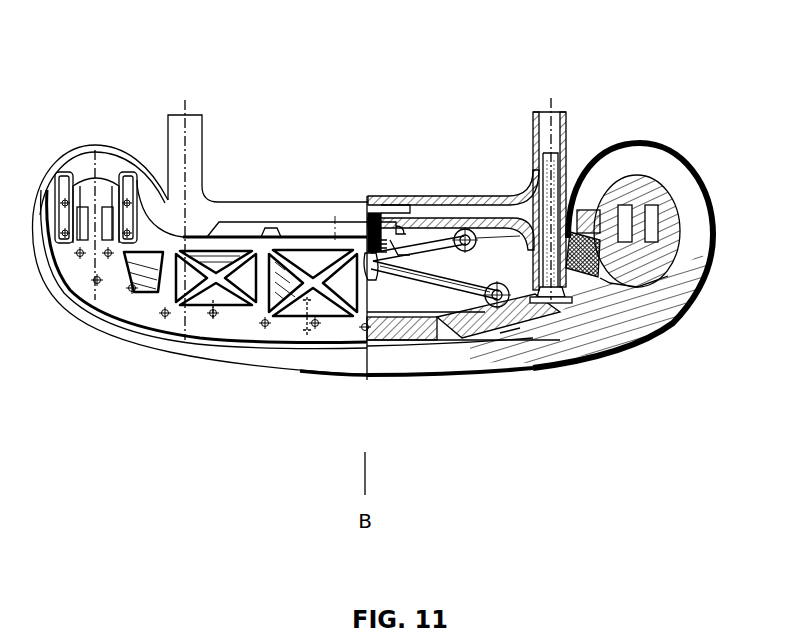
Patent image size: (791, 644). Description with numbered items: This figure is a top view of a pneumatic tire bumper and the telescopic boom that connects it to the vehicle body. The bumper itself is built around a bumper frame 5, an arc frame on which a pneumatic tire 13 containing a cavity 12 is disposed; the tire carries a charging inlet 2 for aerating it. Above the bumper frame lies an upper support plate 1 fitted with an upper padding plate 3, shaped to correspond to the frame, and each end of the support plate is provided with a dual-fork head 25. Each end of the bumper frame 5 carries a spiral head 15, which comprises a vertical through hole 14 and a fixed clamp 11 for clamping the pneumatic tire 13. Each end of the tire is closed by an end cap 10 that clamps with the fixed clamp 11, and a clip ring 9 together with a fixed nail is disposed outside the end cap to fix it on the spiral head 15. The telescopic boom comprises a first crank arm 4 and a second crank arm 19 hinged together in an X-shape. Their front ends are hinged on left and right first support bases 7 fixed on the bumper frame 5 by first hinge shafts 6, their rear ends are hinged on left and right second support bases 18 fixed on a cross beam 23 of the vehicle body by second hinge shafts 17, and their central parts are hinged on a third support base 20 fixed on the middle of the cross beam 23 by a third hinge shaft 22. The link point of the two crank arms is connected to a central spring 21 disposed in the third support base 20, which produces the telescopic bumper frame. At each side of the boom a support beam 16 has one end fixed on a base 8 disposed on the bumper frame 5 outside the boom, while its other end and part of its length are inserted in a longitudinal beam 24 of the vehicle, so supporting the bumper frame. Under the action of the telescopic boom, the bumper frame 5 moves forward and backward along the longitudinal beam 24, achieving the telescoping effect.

The upper support plate 1 is at (143, 303).
The charging inlet 2 is at (315, 292).
The upper padding plate 3 is at (391, 342).
The first crank arm 4 is at (459, 335).
The bumper frame 5 is at (496, 322).
The first hinge shaft 6 is at (243, 293).
The first support base 7 is at (213, 300).
The base 8 is at (555, 292).
The clip ring 9 is at (587, 282).
The end cap 10 is at (600, 262).
The fixed clamp 11 is at (652, 312).
The cavity 12 is at (683, 294).
The pneumatic tire 13 is at (703, 270).
The through hole 14 is at (653, 212).
The spiral head 15 is at (643, 178).
The support beam 16 is at (566, 168).
The second hinge shaft 17 is at (268, 236).
The second support base 18 is at (248, 222).
The second crank arm 19 is at (423, 246).
The third support base 20 is at (400, 212).
The central spring 21 is at (384, 228).
The third hinge shaft 22 is at (368, 240).
The cross beam 23 is at (308, 214).
The longitudinal beam 24 is at (177, 145).
The dual-fork head 25 is at (126, 176).